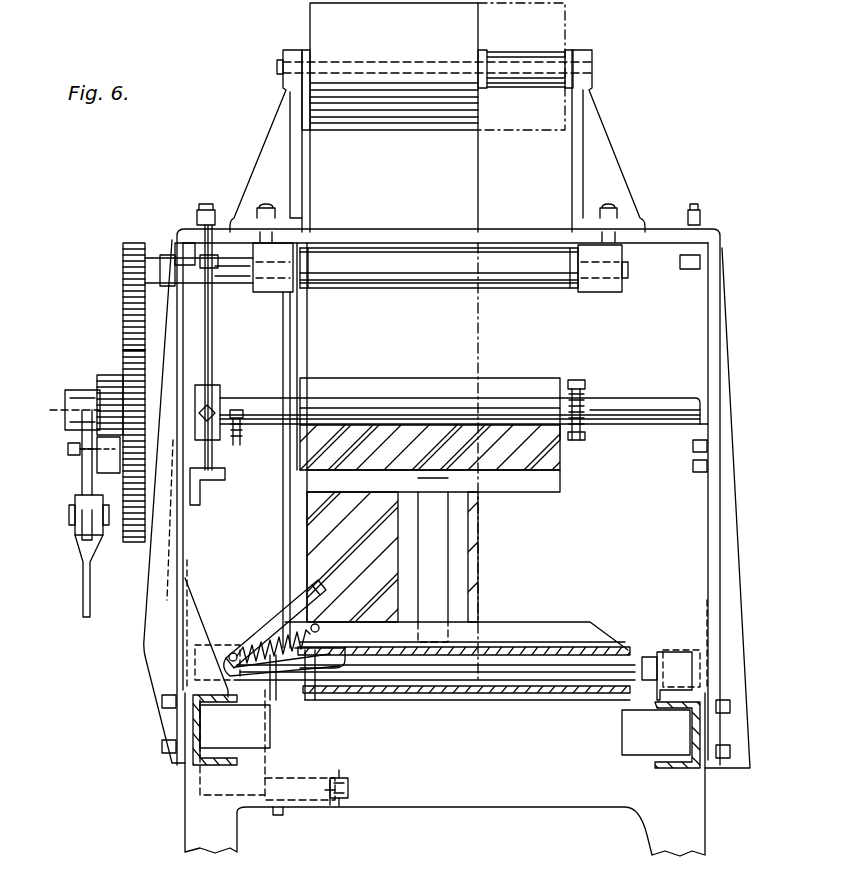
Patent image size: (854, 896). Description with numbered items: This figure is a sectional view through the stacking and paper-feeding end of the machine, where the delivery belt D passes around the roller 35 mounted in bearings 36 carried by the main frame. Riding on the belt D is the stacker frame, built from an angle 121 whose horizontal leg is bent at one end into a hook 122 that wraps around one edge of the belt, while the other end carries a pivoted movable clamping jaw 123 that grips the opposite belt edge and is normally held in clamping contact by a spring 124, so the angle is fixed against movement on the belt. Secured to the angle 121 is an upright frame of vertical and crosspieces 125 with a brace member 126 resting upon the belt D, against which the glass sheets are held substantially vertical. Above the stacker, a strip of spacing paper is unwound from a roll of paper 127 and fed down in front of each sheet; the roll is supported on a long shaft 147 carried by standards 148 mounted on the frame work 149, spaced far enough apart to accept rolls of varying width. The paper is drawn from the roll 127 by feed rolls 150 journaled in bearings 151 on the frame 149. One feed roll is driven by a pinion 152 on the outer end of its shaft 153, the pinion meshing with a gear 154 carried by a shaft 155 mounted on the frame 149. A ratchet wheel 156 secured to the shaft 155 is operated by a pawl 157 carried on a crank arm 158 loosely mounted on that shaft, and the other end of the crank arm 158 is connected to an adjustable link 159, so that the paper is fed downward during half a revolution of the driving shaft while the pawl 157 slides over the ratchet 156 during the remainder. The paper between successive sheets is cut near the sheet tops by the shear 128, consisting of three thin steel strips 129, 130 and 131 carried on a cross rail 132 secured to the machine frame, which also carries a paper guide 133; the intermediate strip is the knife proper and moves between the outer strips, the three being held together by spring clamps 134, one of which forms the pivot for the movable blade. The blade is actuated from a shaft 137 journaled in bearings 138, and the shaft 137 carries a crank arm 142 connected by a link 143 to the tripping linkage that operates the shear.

The roller 35 is at (503, 678).
The bearings 36 is at (222, 650).
The delivery belt D is at (519, 645).
The angle 121 is at (563, 634).
The jaw or hook 122 is at (635, 652).
The movable clamping jaw 123 is at (300, 708).
The spring 124 is at (264, 632).
The vertical and crosspieces 125 is at (535, 488).
The brace member 126 is at (444, 555).
The roll of paper 127 is at (312, 25).
The shear 128 is at (561, 424).
The thin strip of steel 129 is at (348, 422).
The thin strip of steel 130 is at (399, 426).
The thin strip of steel 131 is at (513, 424).
The cross rail 132 is at (643, 421).
The paper guide 133 is at (518, 375).
The spring clamps 134 is at (240, 437).
The shaft 137 is at (282, 533).
The bearing 138 is at (231, 800).
The crank arm 142 is at (310, 787).
The link 143 is at (348, 790).
The shaft 147 is at (520, 47).
The standards 148 is at (290, 140).
The frame work 149 is at (154, 623).
The feed rolls 150 is at (406, 275).
The bearings 151 is at (272, 282).
The pinion 152 is at (137, 241).
The shaft 153 is at (242, 272).
The gear 154 is at (124, 353).
The shaft 155 is at (66, 409).
The ratchet wheel 156 is at (97, 381).
The pawl 157 is at (100, 460).
The crank arm 158 is at (82, 487).
The adjustable link 159 is at (83, 588).